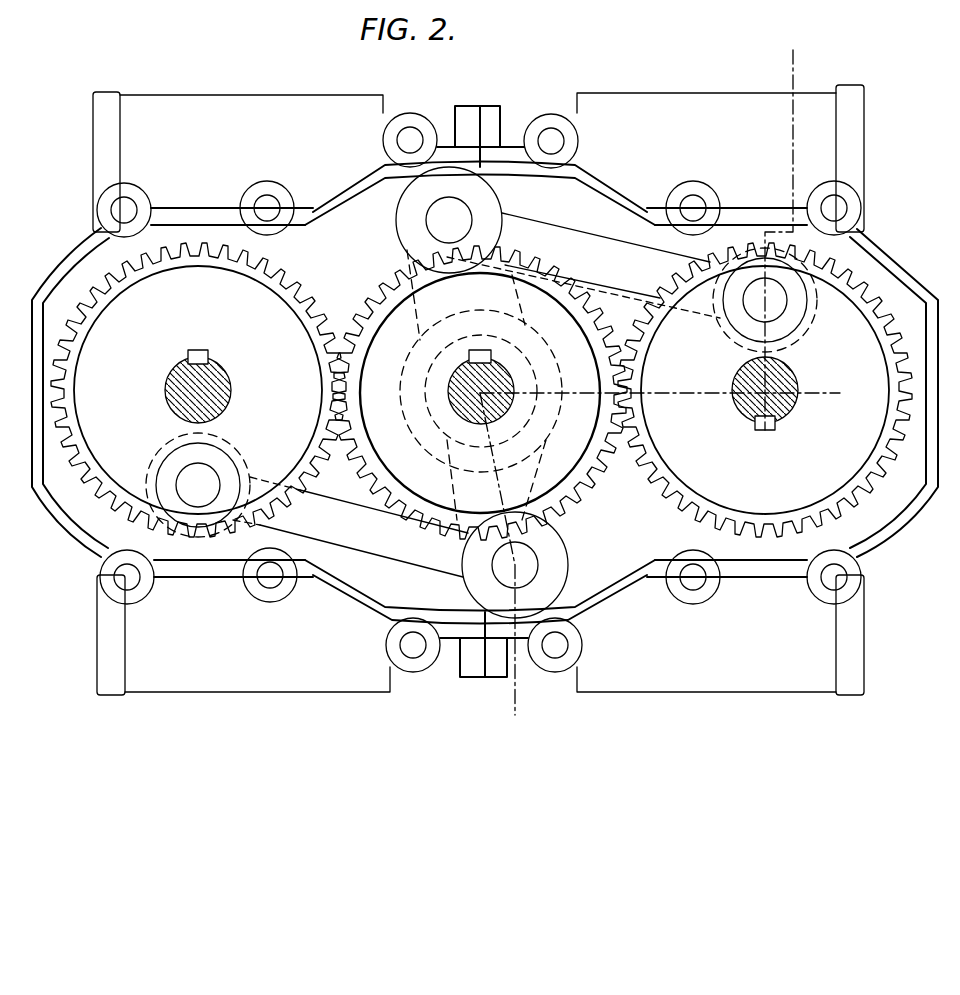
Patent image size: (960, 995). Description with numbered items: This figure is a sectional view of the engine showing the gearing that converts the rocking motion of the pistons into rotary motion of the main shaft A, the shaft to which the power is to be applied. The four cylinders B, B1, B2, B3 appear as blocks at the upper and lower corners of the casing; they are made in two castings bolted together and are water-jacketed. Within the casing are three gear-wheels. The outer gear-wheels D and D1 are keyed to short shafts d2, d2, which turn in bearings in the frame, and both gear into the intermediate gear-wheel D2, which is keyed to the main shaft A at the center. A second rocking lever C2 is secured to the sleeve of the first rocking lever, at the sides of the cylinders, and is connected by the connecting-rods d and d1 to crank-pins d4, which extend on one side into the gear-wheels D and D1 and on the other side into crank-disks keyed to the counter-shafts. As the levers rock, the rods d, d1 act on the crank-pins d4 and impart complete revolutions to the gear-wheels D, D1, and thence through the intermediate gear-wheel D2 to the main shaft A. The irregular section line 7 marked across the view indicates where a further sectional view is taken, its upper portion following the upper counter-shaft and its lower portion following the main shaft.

The cylinder B is at (238, 162).
The cylinder B1 is at (720, 158).
The cylinder B2 is at (720, 635).
The cylinder B3 is at (243, 635).
The gear-wheel D is at (198, 390).
The gear-wheel D1 is at (765, 390).
The intermediate gear-wheel D2 is at (480, 393).
The connecting-rod d is at (350, 527).
The connecting-rod d1 is at (558, 242).
The short shaft d2 is at (232, 396).
The crank-pin d4 is at (481, 392).
The main shaft A is at (503, 376).
The second rocking lever C2 is at (560, 535).
The section line 7 is at (660, 392).